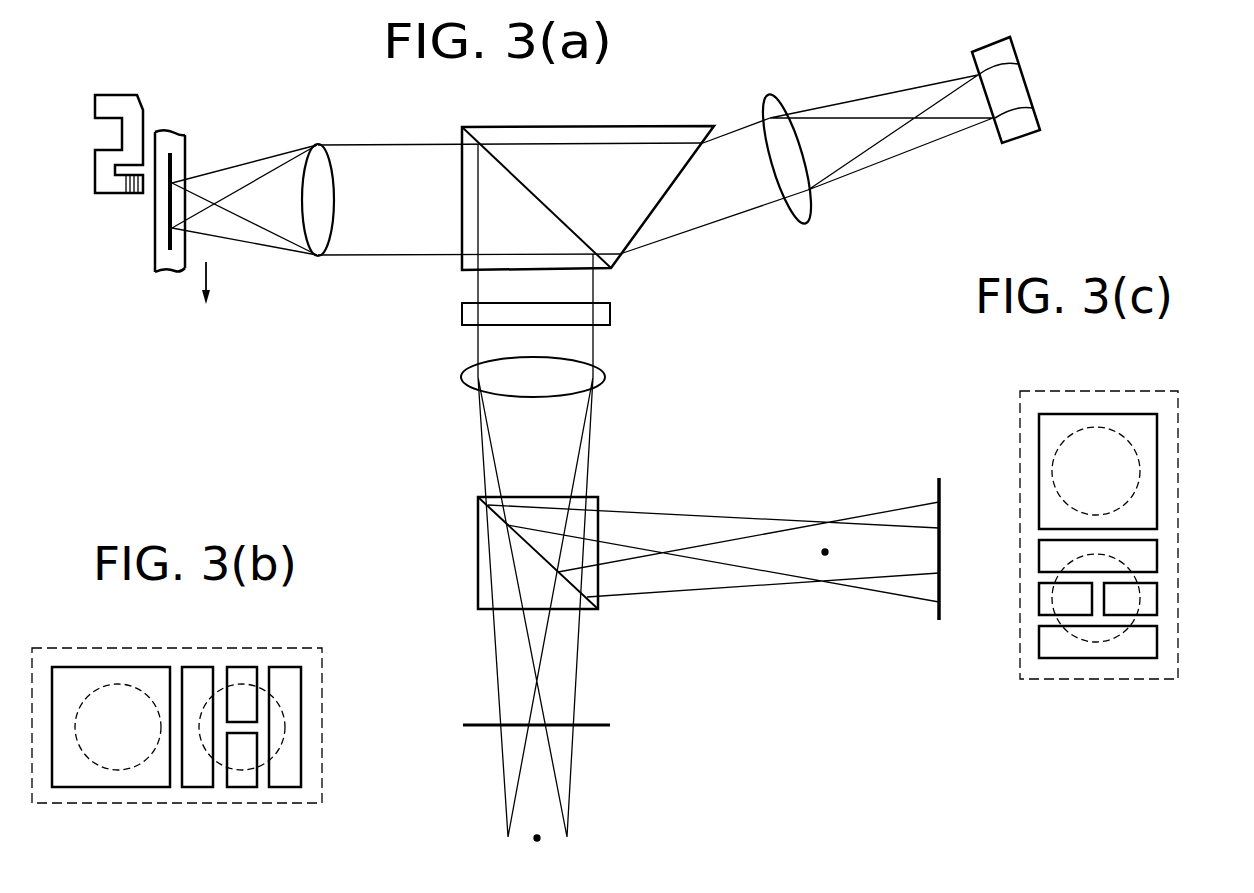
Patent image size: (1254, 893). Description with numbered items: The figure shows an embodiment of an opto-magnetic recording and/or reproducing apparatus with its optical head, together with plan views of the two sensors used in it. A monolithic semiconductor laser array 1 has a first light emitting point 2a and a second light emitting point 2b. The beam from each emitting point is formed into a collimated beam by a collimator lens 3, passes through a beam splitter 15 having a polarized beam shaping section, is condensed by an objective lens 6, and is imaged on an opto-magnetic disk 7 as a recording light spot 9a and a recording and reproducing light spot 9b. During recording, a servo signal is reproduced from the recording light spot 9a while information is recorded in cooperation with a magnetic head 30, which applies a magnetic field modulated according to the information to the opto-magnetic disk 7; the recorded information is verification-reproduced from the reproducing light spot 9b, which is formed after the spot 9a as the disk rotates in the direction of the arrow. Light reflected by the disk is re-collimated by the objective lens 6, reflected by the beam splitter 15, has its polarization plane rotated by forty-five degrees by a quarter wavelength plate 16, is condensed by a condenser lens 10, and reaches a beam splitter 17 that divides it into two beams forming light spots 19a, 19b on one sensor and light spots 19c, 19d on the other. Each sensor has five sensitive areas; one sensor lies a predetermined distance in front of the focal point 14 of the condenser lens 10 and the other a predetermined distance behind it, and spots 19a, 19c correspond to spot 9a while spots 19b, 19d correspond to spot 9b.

The monolithic semiconductor laser array 1 is at (1023, 143).
The first light emitting point 2a is at (1033, 108).
The second light emitting point 2b is at (1018, 64).
The collimator lens 3 is at (815, 203).
The objective lens 6 is at (330, 233).
The opto-magnetic disk 7 is at (155, 253).
The recording light spot 9a is at (177, 178).
The recording and reproducing light spot 9b is at (182, 233).
The condenser lens 10 is at (605, 377).
The focal point 14 is at (828, 558).
The beam splitter 15 is at (628, 127).
The quarter wavelength plate 16 is at (610, 313).
The beam splitter 17 is at (598, 494).
The light spot 19a is at (253, 760).
The light spot 19b is at (148, 760).
The light spot 19c is at (1094, 643).
The light spot 19d is at (1143, 477).
The magnetic head 30 is at (132, 105).